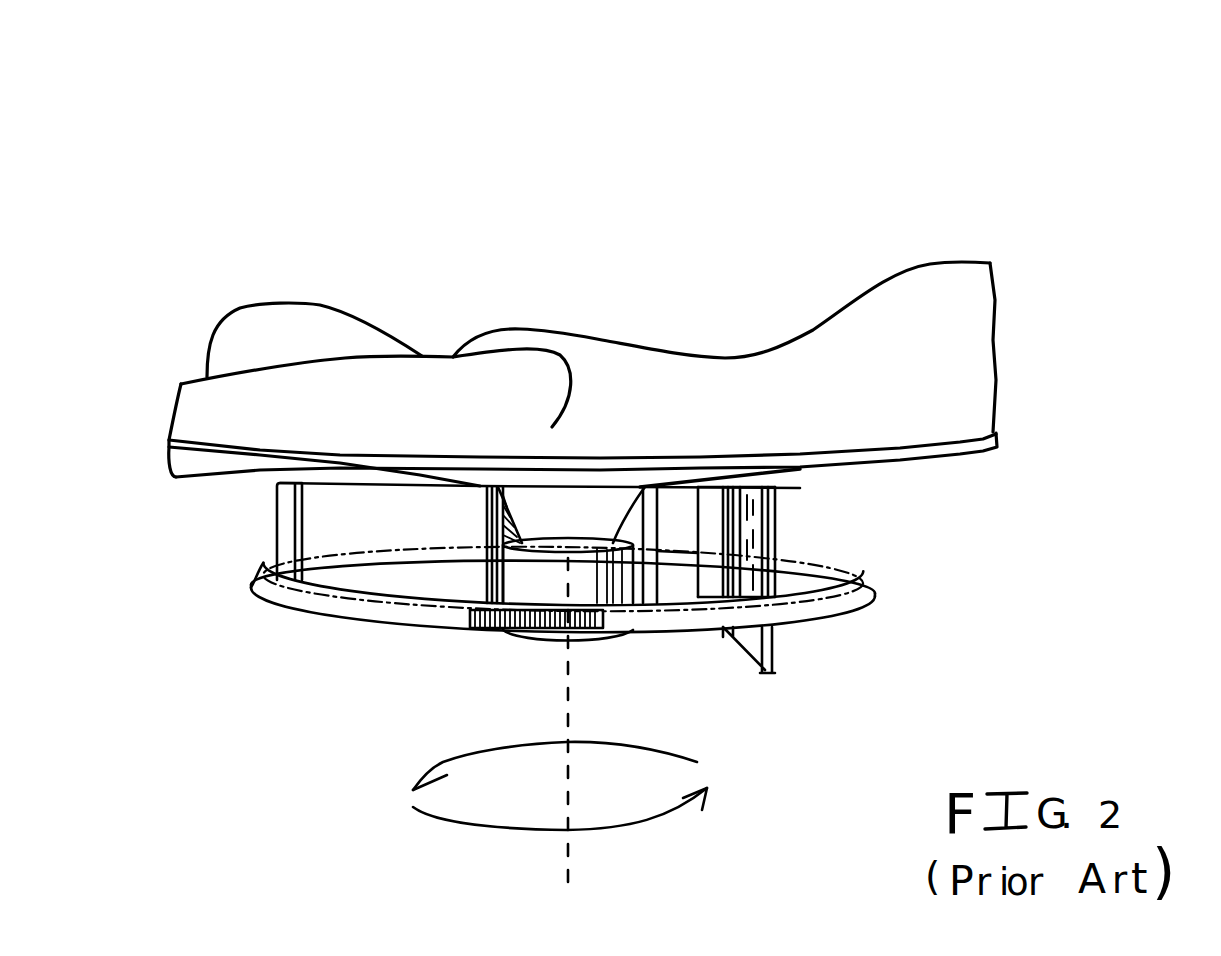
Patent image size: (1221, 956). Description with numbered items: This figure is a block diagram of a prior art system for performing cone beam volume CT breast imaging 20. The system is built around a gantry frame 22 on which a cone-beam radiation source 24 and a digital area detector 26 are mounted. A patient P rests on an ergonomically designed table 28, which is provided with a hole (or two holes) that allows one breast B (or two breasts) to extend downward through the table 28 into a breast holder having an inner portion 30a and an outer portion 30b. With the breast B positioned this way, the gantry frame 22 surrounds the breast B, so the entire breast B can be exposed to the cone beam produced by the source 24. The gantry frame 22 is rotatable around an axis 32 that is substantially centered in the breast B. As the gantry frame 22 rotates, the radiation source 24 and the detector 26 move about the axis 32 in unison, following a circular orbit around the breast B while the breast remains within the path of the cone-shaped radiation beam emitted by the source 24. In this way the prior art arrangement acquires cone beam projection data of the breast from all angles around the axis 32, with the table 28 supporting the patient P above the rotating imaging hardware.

The system for performing cone beam volume CT breast imaging 20 is at (1078, 184).
The gantry frame 22 is at (420, 628).
The cone-beam radiation source 24 is at (775, 542).
The digital area detector 26 is at (290, 527).
The table 28 is at (925, 458).
The inner portion of breast holder 30a is at (545, 580).
The outer portion of breast holder 30b is at (660, 578).
The axis 32 is at (563, 878).
The breast B is at (533, 504).
The patient P is at (728, 372).